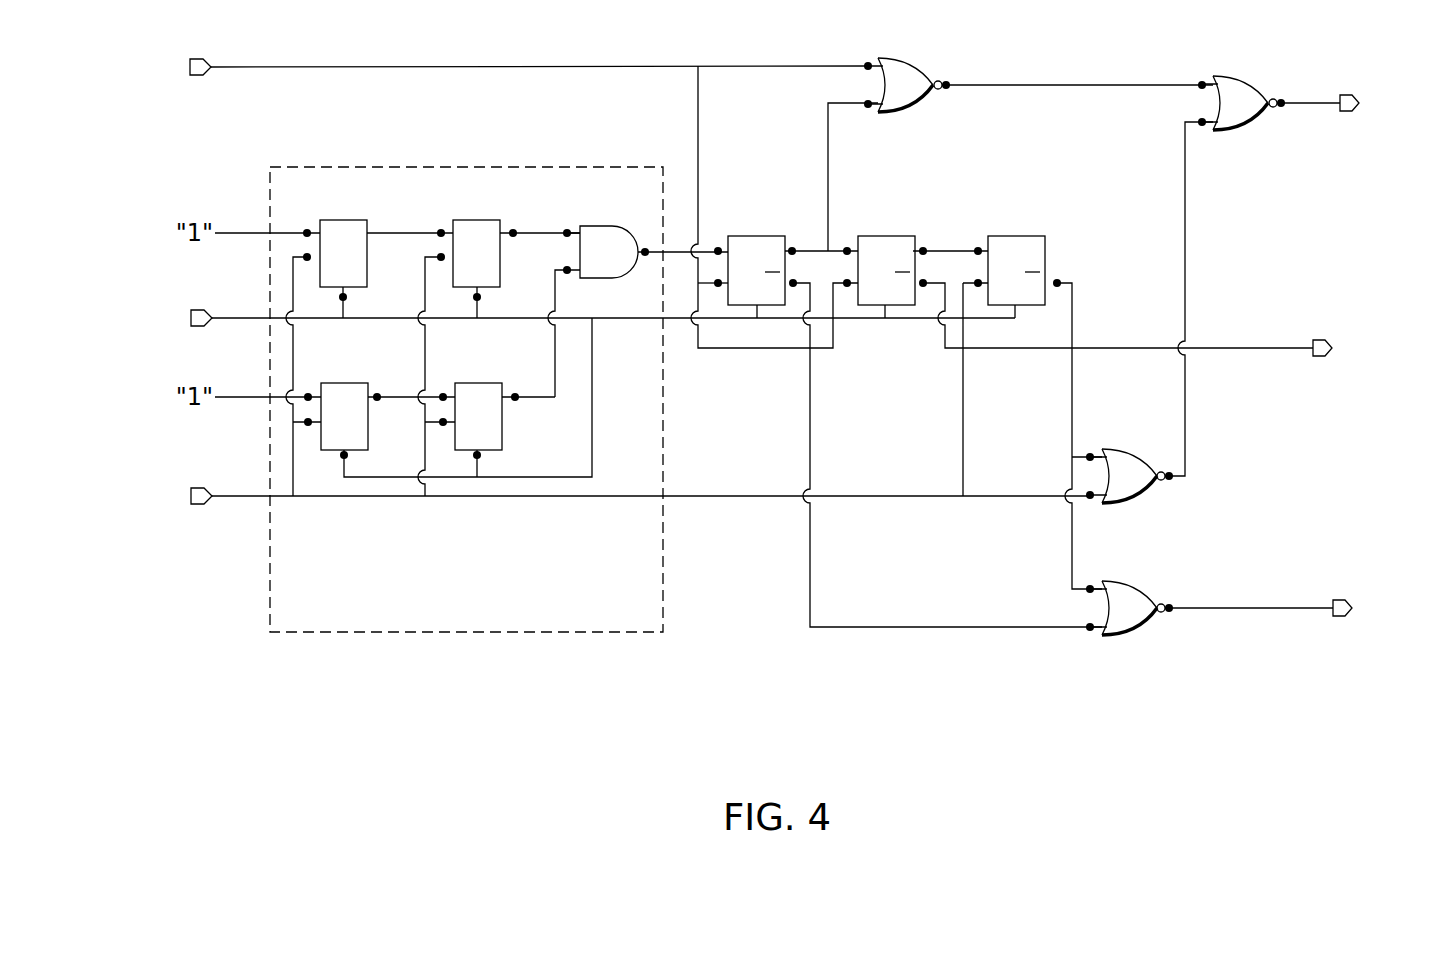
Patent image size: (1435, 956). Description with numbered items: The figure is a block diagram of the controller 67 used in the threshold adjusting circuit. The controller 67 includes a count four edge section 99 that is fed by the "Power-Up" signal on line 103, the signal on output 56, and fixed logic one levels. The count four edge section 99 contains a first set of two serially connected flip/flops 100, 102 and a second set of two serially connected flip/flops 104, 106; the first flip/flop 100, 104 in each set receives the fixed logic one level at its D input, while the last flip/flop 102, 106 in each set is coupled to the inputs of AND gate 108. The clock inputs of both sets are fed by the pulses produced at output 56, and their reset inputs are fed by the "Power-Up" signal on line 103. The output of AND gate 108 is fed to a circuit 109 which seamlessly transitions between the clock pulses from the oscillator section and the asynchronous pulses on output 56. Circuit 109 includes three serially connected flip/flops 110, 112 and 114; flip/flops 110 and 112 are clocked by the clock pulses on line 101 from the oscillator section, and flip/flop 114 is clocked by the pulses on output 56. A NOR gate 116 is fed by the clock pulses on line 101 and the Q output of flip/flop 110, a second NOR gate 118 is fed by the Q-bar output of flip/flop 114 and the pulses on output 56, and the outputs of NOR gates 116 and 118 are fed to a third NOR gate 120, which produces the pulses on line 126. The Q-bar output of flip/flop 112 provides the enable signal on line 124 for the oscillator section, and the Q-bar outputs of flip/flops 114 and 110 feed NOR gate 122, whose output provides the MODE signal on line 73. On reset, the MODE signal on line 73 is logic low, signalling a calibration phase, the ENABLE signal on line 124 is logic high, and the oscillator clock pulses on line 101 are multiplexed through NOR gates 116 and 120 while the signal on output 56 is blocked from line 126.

The controller 67 is at (620, 31).
The line 101 is at (410, 66).
The count four edge section 99 is at (484, 167).
The flip/flop 100 is at (345, 220).
The flip/flop 102 is at (478, 220).
The flip/flop 104 is at (343, 383).
The flip/flop 106 is at (478, 383).
The AND gate 108 is at (613, 226).
The flip/flop 110 is at (758, 236).
The flip/flop 112 is at (888, 236).
The flip/flop 114 is at (1015, 236).
The NOR gate 116 is at (917, 60).
The second NOR gate 118 is at (1140, 453).
The third NOR gate 120 is at (1250, 75).
The NOR gate 122 is at (1142, 585).
The line 124 is at (1272, 345).
The line 126 is at (1315, 100).
The line 73 is at (1276, 605).
The line 103 is at (233, 312).
The output 56 is at (423, 370).
The circuit 109 is at (1029, 166).